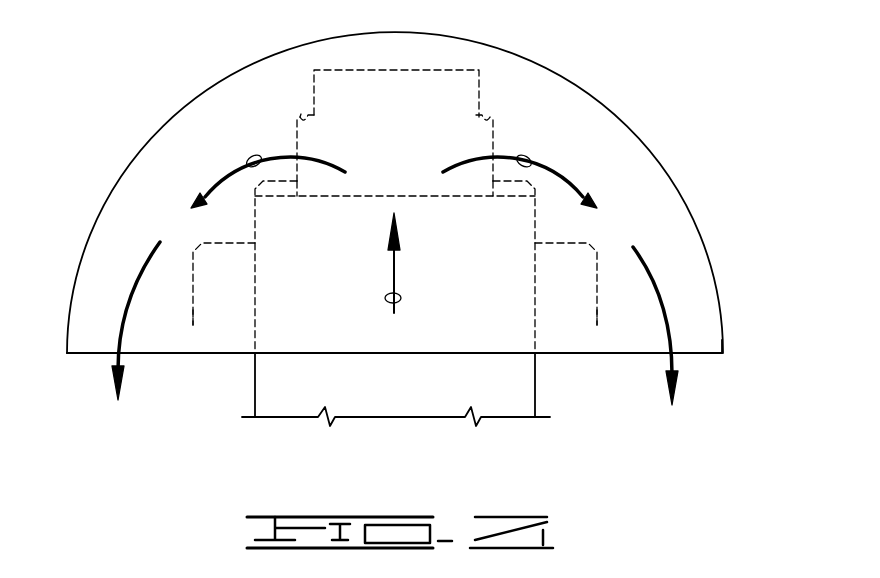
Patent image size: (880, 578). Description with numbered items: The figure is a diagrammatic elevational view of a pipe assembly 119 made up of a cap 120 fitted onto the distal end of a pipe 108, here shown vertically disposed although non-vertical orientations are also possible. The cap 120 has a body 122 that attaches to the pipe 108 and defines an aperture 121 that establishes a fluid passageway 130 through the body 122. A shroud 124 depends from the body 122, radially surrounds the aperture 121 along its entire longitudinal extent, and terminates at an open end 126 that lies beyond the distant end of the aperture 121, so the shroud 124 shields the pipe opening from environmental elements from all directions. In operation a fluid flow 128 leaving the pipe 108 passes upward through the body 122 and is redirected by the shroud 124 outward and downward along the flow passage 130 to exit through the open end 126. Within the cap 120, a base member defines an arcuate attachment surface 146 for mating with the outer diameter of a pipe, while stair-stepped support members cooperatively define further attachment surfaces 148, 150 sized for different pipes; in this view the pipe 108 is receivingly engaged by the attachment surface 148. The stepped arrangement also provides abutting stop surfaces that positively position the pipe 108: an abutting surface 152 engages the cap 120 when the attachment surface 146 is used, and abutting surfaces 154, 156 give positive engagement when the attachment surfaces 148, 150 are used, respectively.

The pipe 108 is at (537, 398).
The pipe assembly 119 is at (203, 408).
The cap 120 is at (198, 70).
The aperture 121 is at (297, 123).
The body 122 is at (497, 137).
The shroud 124 is at (677, 186).
The open end 126 is at (204, 355).
The fluid flow 128 is at (385, 298).
The fluid passageway 130 is at (249, 158).
The arcuate attachment surface 146 is at (194, 317).
The attachment surface 148 is at (256, 222).
The attachment surface 150 is at (298, 152).
The abutting surface 152 is at (228, 243).
The abutting surface 154 is at (276, 182).
The abutting surface 156 is at (308, 120).